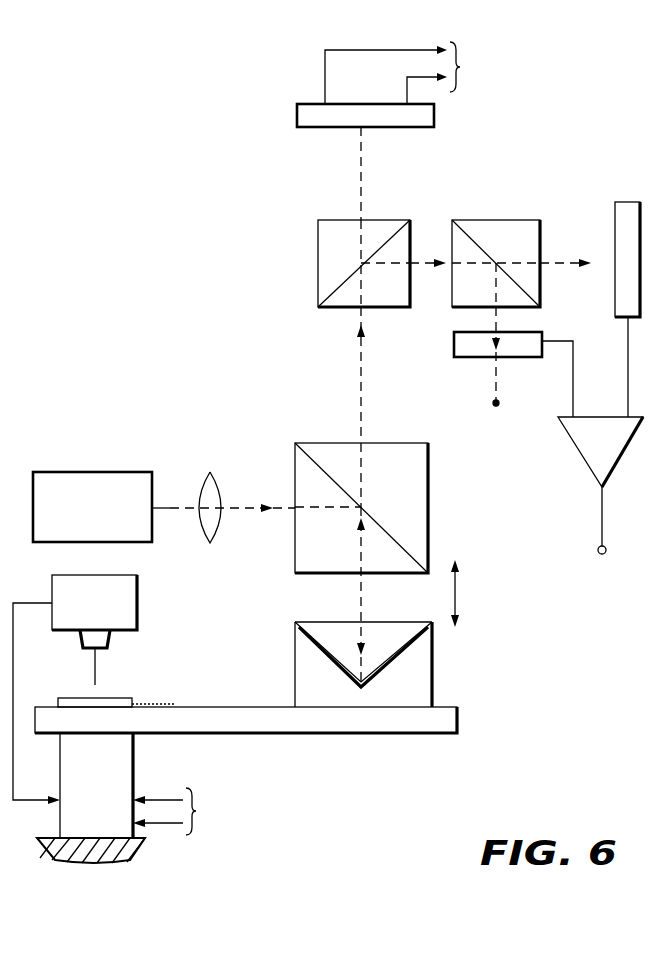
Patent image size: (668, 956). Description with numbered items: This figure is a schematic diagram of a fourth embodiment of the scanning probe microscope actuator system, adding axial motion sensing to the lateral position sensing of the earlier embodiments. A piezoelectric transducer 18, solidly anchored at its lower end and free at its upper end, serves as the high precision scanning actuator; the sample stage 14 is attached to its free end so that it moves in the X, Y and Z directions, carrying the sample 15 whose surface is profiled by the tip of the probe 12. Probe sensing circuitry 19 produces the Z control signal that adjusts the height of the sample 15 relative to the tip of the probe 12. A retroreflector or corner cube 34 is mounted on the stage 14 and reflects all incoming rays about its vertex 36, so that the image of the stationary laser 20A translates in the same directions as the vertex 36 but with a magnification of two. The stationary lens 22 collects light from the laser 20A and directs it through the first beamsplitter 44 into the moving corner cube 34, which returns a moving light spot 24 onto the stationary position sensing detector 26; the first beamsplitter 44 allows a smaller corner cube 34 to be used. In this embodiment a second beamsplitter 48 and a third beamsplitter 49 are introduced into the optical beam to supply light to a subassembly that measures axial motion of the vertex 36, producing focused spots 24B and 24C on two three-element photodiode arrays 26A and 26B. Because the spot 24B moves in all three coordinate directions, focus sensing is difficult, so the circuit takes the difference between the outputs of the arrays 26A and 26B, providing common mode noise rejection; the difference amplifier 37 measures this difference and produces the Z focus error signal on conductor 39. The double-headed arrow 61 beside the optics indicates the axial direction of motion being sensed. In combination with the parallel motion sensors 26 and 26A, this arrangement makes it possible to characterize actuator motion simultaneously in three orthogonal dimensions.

The probe 12 is at (95, 668).
The sample stage 14 is at (247, 733).
The sample 15 is at (128, 700).
The piezoelectric transducer 18 is at (133, 758).
The probe sensing circuitry 19 is at (137, 607).
The laser 20A is at (118, 472).
The stationary lens 22 is at (216, 482).
The moving light spot 24 is at (362, 127).
The focused spot 24B is at (591, 262).
The focused spot 24C is at (496, 403).
The position sensing detector 26 is at (435, 119).
The three-element photodiode array 26A is at (631, 185).
The three-element photodiode array 26B is at (454, 340).
The corner cube 34 is at (432, 680).
The vertex 36 is at (361, 682).
The difference amplifier 37 is at (562, 425).
The conductor 39 is at (606, 548).
The first beamsplitter 44 is at (428, 522).
The second beamsplitter 48 is at (317, 264).
The third beamsplitter 49 is at (508, 219).
The Z displacement arrow 61 is at (455, 595).